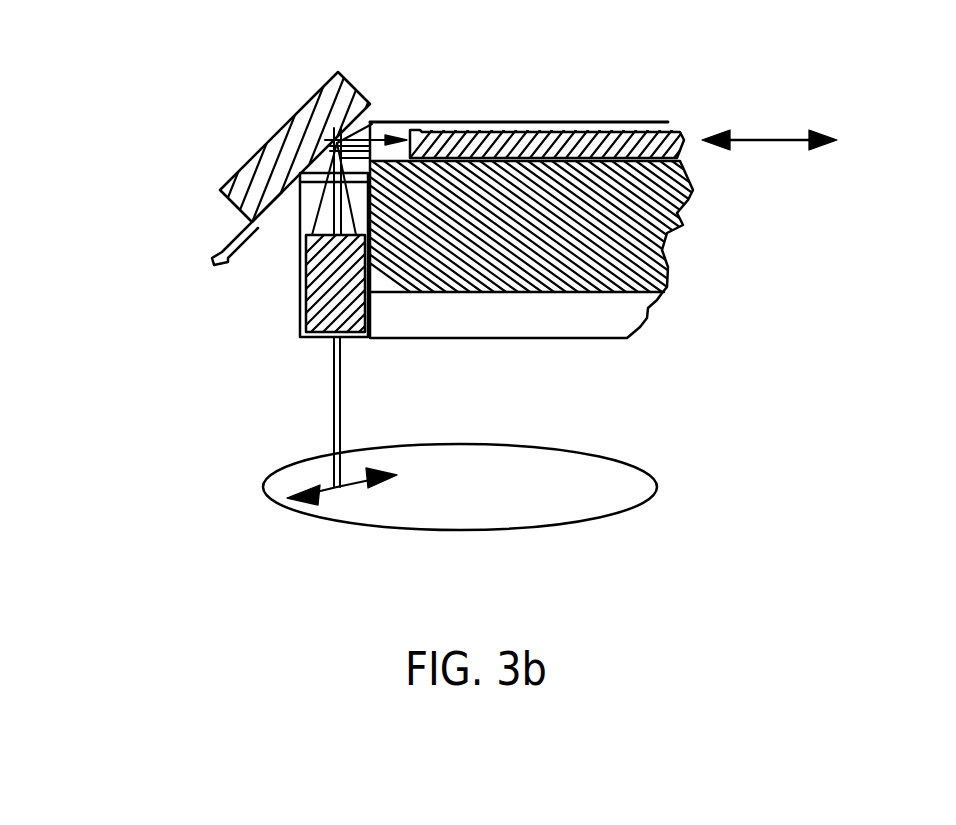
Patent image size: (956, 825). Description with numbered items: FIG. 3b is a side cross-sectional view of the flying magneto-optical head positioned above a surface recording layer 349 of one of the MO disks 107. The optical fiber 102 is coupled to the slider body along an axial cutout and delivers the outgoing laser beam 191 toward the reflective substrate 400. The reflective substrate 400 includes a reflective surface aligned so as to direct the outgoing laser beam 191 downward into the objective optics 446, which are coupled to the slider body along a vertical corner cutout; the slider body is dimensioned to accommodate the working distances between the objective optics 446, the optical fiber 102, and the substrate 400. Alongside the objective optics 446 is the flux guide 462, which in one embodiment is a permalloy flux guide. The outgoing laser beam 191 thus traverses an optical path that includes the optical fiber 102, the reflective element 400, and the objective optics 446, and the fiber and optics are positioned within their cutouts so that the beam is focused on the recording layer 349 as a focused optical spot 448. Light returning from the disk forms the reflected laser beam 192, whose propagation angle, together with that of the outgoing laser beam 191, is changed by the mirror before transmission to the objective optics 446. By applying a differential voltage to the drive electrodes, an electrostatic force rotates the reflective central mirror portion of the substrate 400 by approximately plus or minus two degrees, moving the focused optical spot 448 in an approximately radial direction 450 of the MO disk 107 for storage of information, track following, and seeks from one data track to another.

The optical fiber 102 is at (550, 122).
The outgoing laser beam 191 is at (769, 115).
The reflected laser beam 192 is at (769, 142).
The reflective substrate 400 is at (237, 186).
The objective optics 446 is at (325, 284).
The flux guide 462 is at (300, 334).
The MO disk 107 is at (267, 478).
The surface recording layer 349 is at (542, 510).
The radial direction 450 is at (327, 493).
The focused optical spot 448 is at (340, 488).